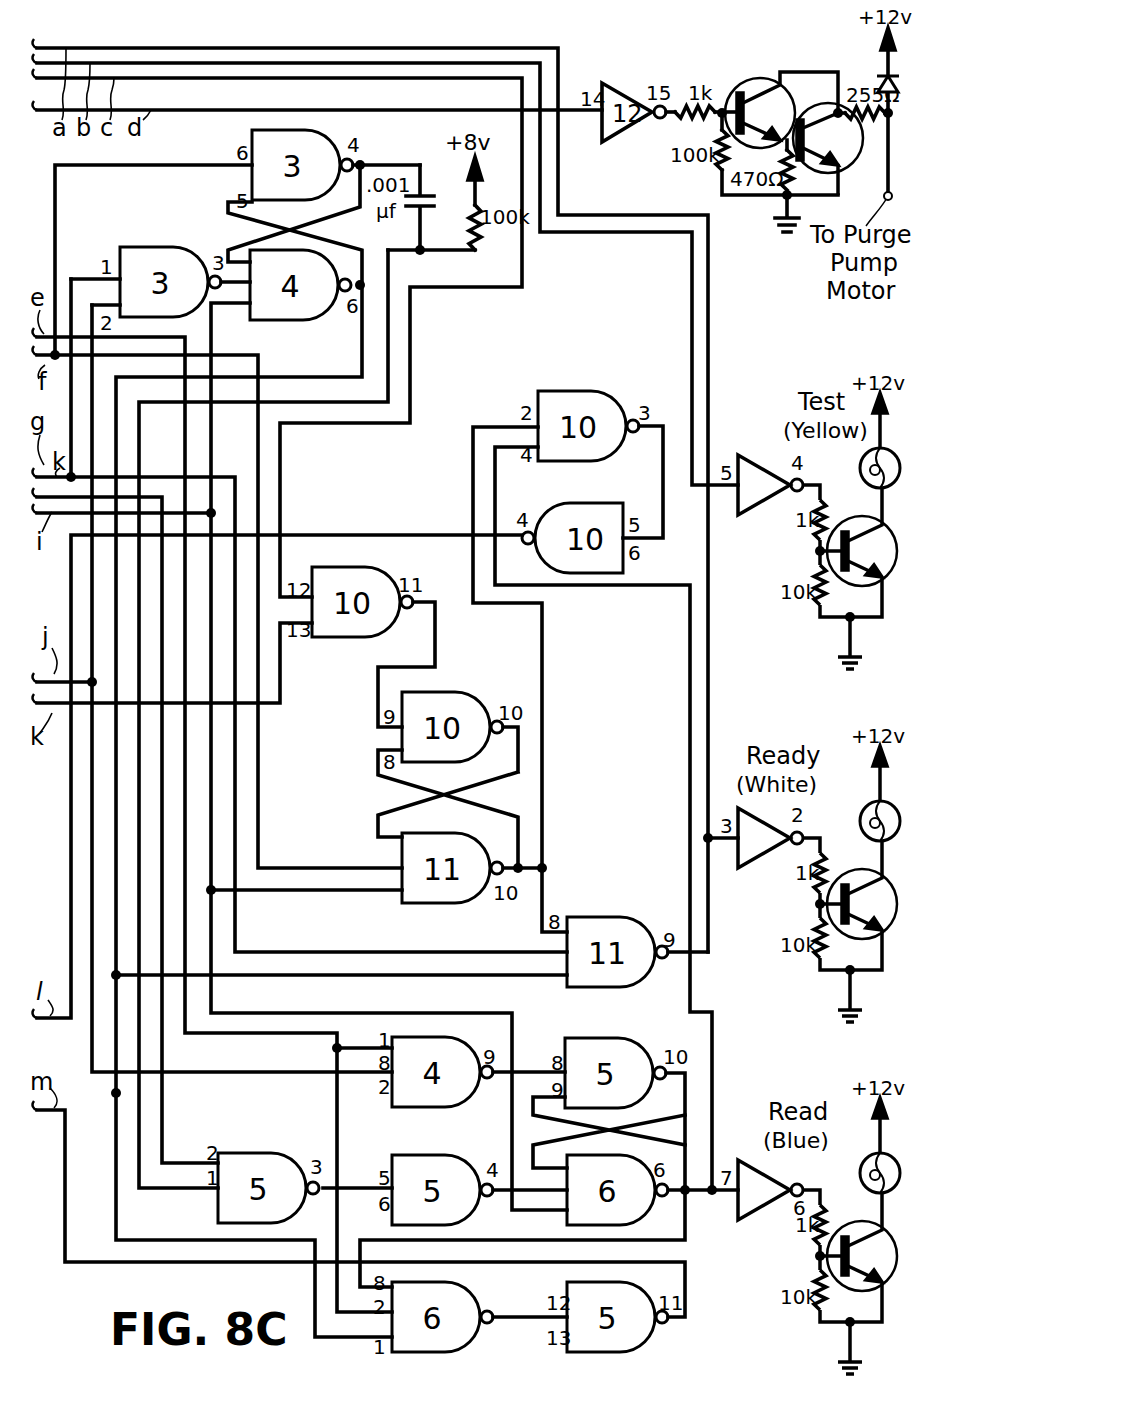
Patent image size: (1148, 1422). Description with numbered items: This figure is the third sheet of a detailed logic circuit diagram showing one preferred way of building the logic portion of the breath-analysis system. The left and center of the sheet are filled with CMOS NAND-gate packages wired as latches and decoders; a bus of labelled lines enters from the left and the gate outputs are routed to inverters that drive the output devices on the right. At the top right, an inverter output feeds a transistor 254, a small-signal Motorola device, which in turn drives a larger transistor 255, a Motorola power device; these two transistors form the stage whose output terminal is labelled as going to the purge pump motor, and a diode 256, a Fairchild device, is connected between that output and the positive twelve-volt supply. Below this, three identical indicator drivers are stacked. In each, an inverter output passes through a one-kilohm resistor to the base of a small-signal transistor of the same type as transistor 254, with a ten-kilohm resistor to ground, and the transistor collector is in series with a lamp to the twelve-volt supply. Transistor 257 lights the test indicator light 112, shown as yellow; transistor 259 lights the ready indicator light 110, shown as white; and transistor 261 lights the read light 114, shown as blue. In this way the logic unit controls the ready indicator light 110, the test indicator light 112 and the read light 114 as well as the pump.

The ready indicator light 110 is at (860, 840).
The test indicator light 112 is at (860, 466).
The read light 114 is at (860, 1170).
The transistor 254 is at (760, 78).
The transistor 255 is at (852, 150).
The diode 256 is at (880, 88).
The transistor 257 is at (852, 578).
The transistor 259 is at (852, 931).
The transistor 261 is at (852, 1283).